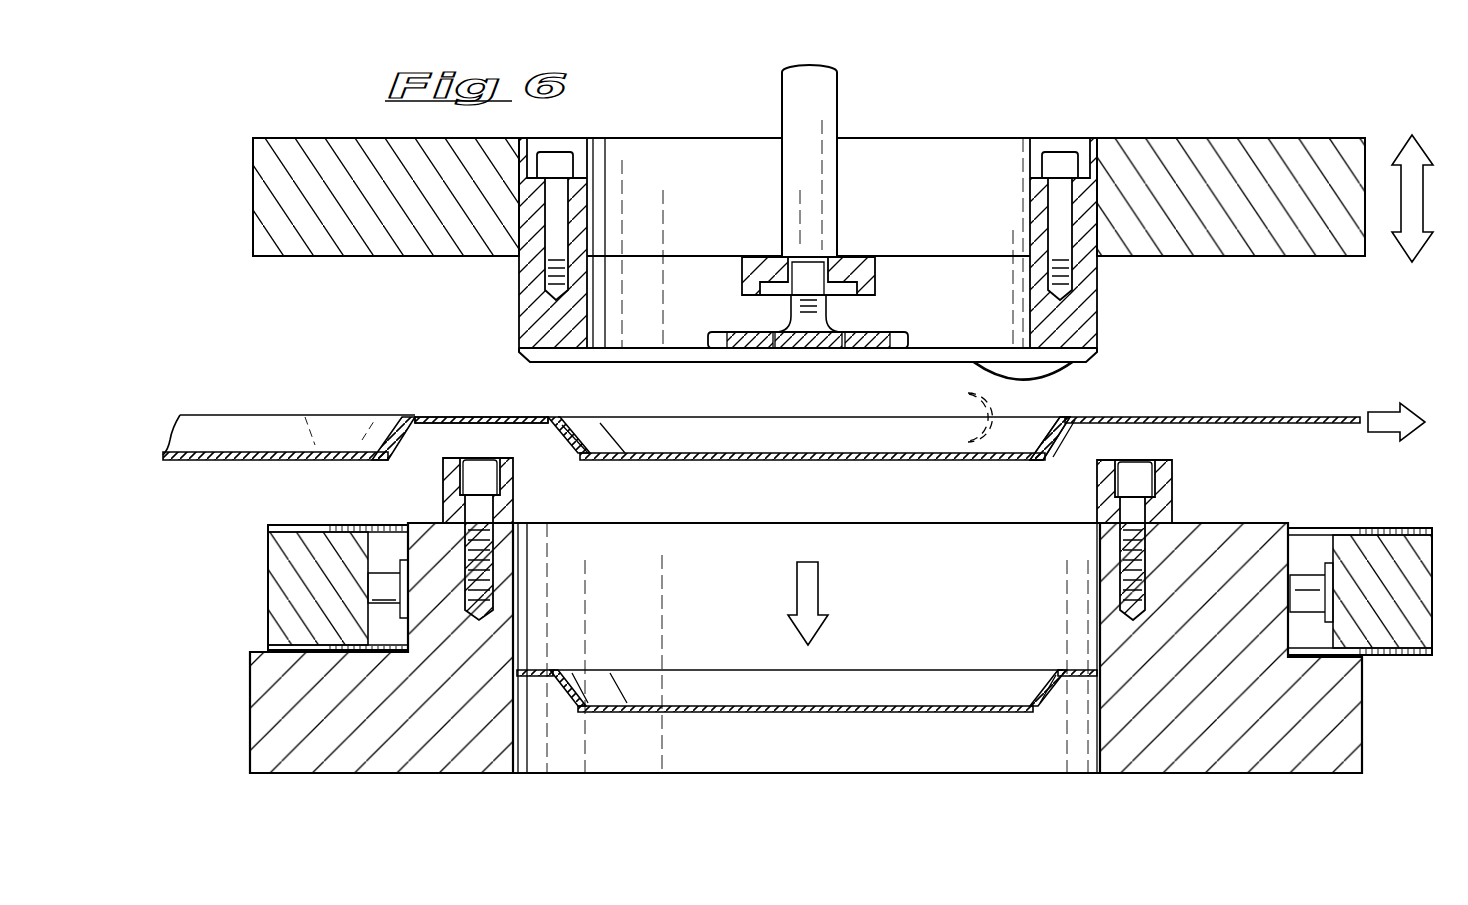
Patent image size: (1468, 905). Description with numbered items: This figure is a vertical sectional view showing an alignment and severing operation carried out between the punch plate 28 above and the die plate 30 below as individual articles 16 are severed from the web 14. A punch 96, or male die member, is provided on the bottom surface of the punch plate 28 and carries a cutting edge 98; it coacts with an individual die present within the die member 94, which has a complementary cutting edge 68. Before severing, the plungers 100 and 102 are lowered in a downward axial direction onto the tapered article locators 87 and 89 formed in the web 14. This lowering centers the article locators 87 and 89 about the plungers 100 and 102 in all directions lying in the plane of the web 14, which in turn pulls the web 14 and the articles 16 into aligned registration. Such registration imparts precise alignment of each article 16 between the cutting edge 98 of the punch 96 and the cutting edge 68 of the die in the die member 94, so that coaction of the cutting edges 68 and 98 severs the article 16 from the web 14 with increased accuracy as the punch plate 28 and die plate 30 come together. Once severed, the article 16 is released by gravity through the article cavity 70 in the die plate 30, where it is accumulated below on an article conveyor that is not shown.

The punch plate 28 is at (1222, 138).
The cutting edge 98 is at (1100, 366).
The plunger 102 is at (1040, 380).
The plunger 100 is at (1023, 370).
The web 14 is at (1262, 410).
The article locator 87 is at (968, 393).
The article locator 89 is at (978, 417).
The punch 96 is at (530, 380).
The article 16 is at (745, 418).
The die plate 30 is at (1362, 728).
The cutting edge 68 is at (523, 465).
The die member 94 is at (1175, 494).
The article cavity 70 is at (1068, 492).